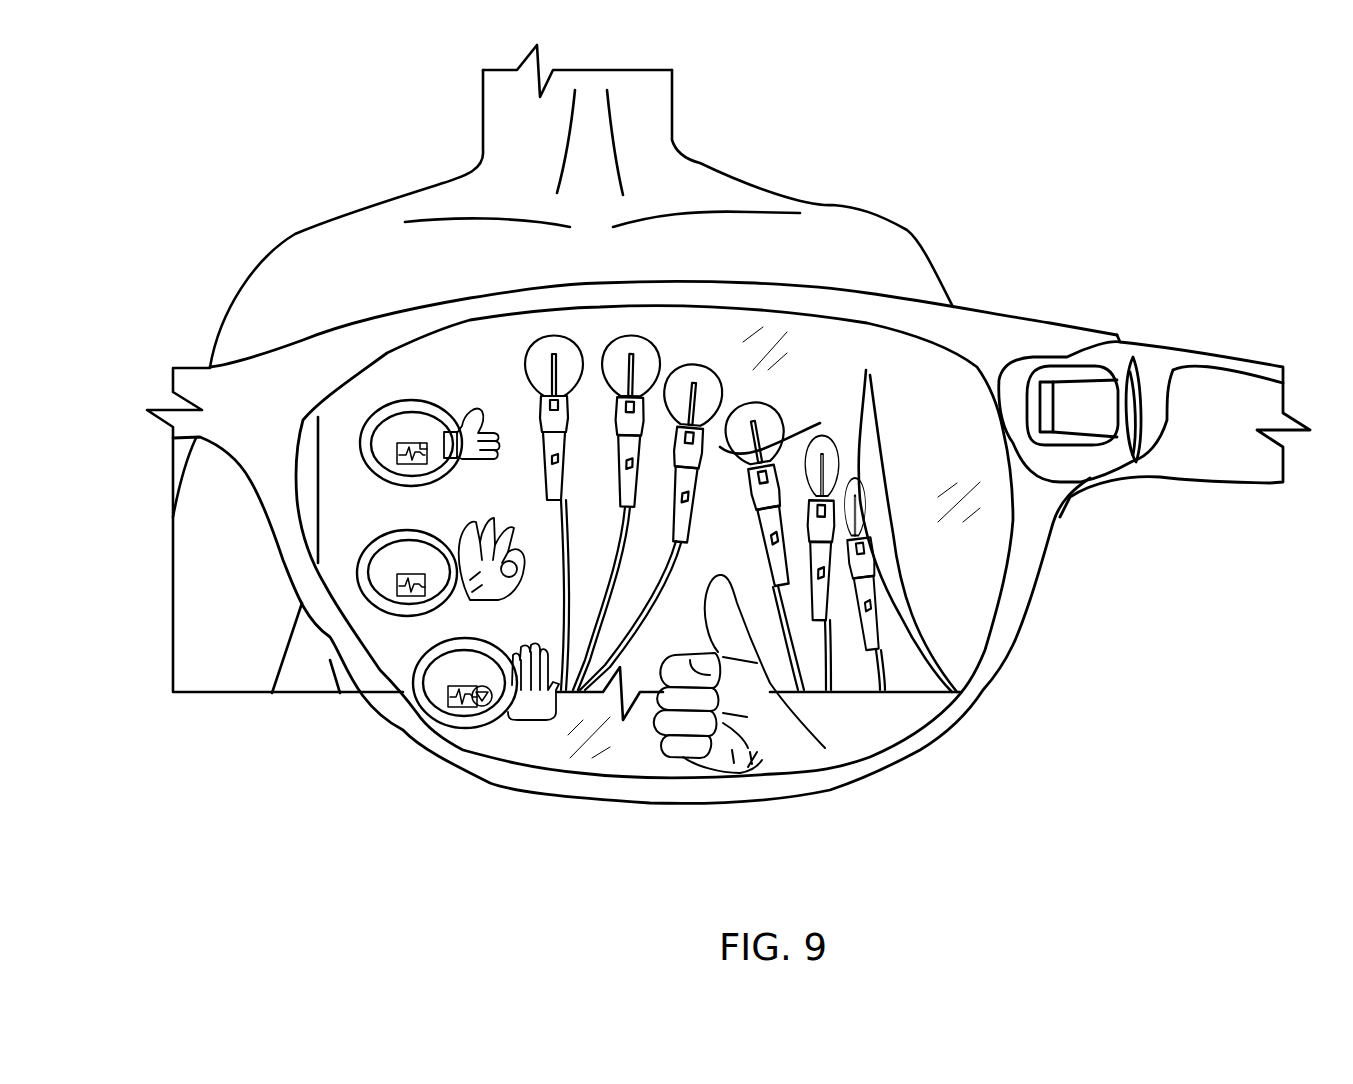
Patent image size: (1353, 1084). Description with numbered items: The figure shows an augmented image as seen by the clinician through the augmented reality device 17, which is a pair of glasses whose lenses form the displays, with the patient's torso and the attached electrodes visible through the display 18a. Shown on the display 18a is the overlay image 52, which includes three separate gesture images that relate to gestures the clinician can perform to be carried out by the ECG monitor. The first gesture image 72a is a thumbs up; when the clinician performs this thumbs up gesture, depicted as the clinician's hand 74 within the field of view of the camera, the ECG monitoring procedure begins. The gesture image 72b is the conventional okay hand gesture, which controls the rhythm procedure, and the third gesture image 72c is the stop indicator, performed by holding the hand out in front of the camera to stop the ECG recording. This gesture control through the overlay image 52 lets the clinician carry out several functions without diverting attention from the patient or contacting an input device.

The augmented reality device 17 is at (1067, 325).
The display 18a is at (833, 350).
The overlay image 52 is at (408, 378).
The first gesture image 72a is at (467, 412).
The gesture image 72b is at (480, 520).
The third gesture image 72c is at (526, 720).
The thumbs up gesture 74 is at (707, 762).